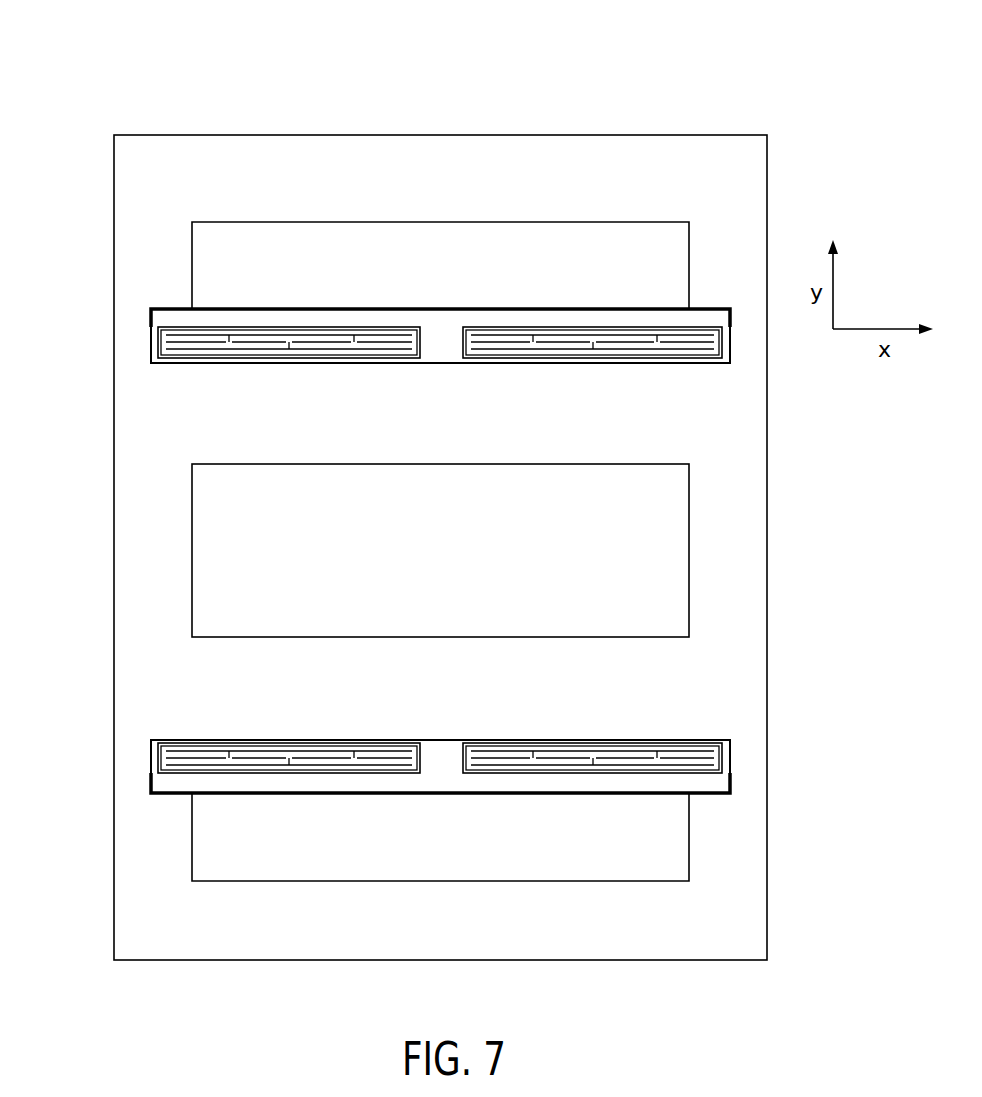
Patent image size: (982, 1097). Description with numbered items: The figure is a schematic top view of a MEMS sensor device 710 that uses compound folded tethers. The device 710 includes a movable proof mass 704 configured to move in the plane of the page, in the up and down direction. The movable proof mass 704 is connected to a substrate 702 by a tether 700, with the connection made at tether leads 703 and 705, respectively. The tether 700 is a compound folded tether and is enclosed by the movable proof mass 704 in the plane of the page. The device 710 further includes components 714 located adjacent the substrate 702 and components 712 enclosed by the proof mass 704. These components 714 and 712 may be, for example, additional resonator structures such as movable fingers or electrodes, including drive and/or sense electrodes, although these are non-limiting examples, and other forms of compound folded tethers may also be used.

The tether 700 is at (141, 340).
The substrate 702 is at (180, 316).
The tether lead 703 is at (152, 320).
The movable proof mass 704 is at (160, 366).
The tether lead 705 is at (152, 352).
The MEMS sensor device 710 is at (98, 98).
The components 712 is at (442, 448).
The components 714 is at (441, 203).